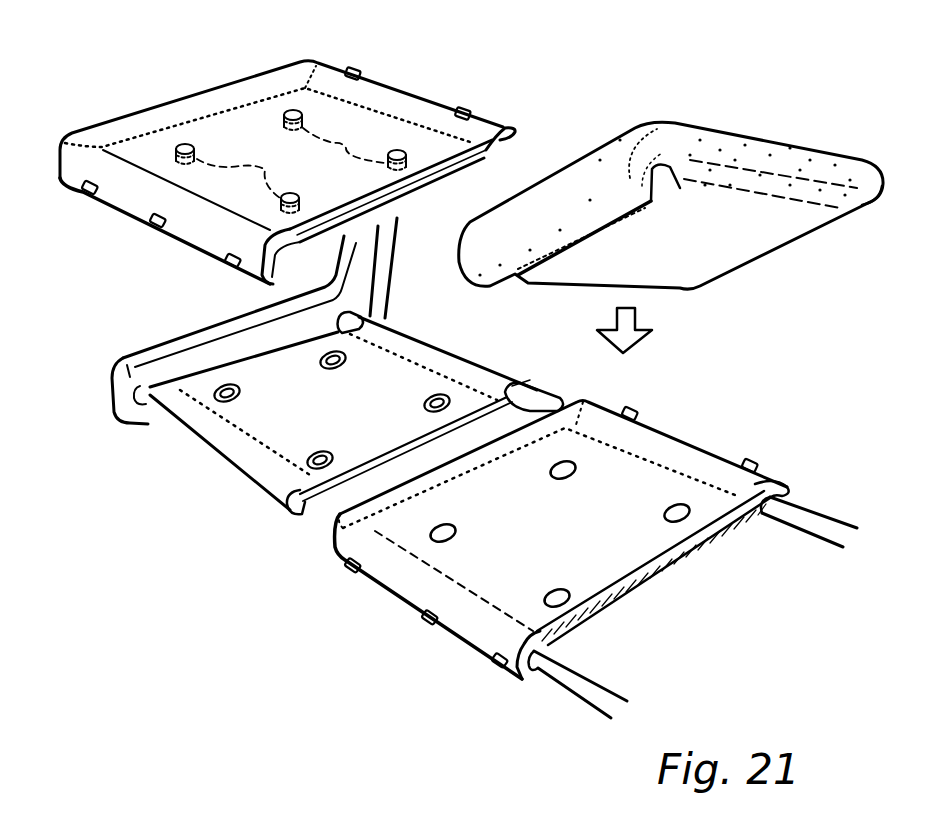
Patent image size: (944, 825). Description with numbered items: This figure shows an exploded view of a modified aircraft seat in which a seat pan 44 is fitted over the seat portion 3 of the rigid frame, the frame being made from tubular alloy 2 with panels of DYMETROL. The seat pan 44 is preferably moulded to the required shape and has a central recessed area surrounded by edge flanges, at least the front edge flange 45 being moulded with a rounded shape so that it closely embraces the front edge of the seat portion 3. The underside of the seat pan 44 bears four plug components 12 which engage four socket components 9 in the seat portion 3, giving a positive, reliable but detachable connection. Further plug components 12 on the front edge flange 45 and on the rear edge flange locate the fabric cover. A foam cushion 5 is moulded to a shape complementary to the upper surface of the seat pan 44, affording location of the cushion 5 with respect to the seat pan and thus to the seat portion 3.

The tubular alloy 2 is at (540, 398).
The seat portion 3 is at (397, 373).
The foam cushion 5 is at (565, 183).
The socket component 9 is at (328, 372).
The plug component 12 is at (352, 66).
The seat pan 44 is at (215, 100).
The front edge flange 45 is at (210, 225).